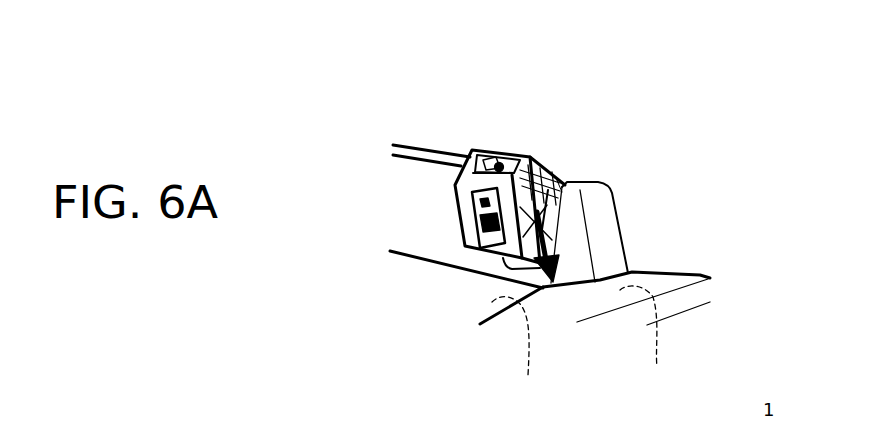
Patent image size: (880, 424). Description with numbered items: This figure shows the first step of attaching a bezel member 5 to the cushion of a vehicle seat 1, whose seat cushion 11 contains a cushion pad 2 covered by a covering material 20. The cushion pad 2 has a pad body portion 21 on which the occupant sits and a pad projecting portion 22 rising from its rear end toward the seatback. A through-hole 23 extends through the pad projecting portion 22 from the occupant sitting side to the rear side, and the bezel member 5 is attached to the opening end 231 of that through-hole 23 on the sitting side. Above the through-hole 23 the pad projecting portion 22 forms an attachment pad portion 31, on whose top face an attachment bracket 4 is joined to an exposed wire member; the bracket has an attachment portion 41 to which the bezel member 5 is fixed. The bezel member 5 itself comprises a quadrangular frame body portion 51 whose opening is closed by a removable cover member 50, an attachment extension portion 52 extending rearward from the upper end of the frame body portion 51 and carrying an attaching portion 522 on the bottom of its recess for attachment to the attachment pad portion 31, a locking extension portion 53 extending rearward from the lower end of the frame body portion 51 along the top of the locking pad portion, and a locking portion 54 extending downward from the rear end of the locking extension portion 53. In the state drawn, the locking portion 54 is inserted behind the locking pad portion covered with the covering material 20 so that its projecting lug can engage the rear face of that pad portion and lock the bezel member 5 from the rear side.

The vehicle seat 1 is at (676, 82).
The seat cushion 11 is at (696, 274).
The cushion pad 2 is at (647, 342).
The covering material 20 is at (407, 187).
The pad body portion 21 is at (524, 352).
The pad projecting portion 22 is at (422, 140).
The through-hole 23 is at (546, 218).
The opening end 231 is at (545, 175).
The attachment pad portion 31 is at (563, 175).
The attachment portion 41 is at (559, 185).
The attachment bracket 4 is at (568, 178).
The bezel member 5 is at (450, 210).
The cover member 50 is at (483, 243).
The frame body portion 51 is at (493, 253).
The attachment extension portion 52 is at (478, 152).
The attaching portion 522 is at (500, 152).
The locking extension portion 53 is at (546, 243).
The locking portion 54 is at (547, 252).